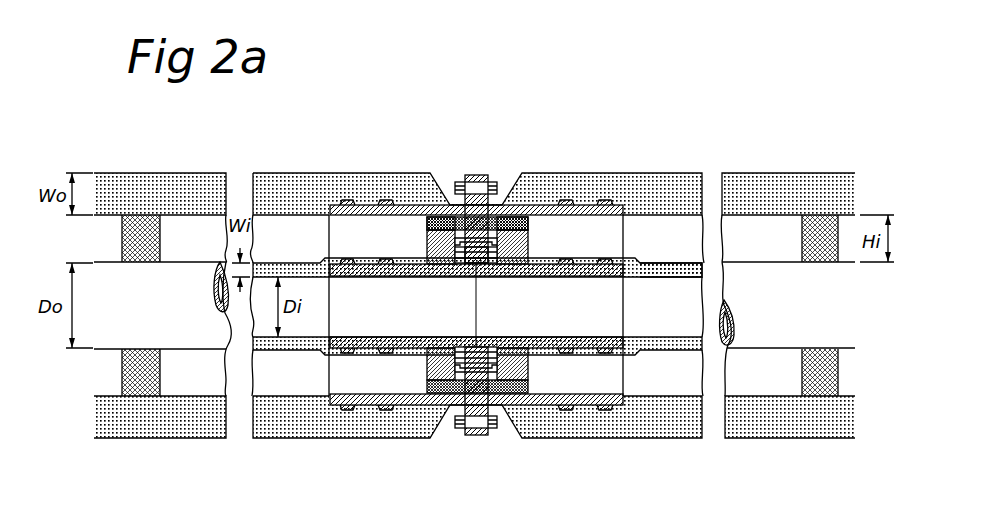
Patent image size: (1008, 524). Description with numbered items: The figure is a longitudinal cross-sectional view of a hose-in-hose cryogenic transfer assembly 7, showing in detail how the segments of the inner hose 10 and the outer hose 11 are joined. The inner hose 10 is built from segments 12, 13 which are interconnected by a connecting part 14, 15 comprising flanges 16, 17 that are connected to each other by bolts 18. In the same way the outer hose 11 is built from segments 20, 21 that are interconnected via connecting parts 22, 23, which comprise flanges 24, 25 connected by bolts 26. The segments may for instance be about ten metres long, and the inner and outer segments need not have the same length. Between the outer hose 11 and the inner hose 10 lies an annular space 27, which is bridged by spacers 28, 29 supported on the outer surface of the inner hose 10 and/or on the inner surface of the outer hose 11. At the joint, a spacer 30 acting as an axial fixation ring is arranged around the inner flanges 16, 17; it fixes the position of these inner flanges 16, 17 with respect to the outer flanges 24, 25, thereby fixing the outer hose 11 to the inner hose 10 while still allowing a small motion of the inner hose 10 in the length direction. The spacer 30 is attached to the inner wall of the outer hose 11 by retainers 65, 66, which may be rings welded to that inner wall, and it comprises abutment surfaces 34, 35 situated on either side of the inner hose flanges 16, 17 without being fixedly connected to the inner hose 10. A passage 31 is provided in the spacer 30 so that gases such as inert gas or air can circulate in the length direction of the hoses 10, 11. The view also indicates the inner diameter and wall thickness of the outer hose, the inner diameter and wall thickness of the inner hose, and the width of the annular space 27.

The connector assembly 7 is at (360, 108).
The inner hose 10 is at (842, 330).
The outer hose 11 is at (812, 175).
The segment 12 is at (683, 268).
The segment 13 is at (290, 268).
The connecting part 14 is at (535, 245).
The connecting part 15 is at (347, 263).
The flange 16 is at (488, 272).
The flange 17 is at (468, 272).
The bolt 18 is at (462, 400).
The segment 20 is at (640, 172).
The segment 21 is at (125, 188).
The connecting part 22 is at (533, 228).
The connecting part 23 is at (387, 203).
The flange 24 is at (485, 177).
The flange 25 is at (467, 178).
The bolt 26 is at (493, 421).
The space 27 is at (765, 238).
The spacer 28 is at (143, 235).
The spacer 29 is at (813, 392).
The spacer 30 is at (567, 380).
The passage 31 is at (427, 382).
The abutment surface 34 is at (490, 240).
The abutment surface 35 is at (463, 238).
The retainer 65 is at (517, 222).
The retainer 66 is at (432, 220).